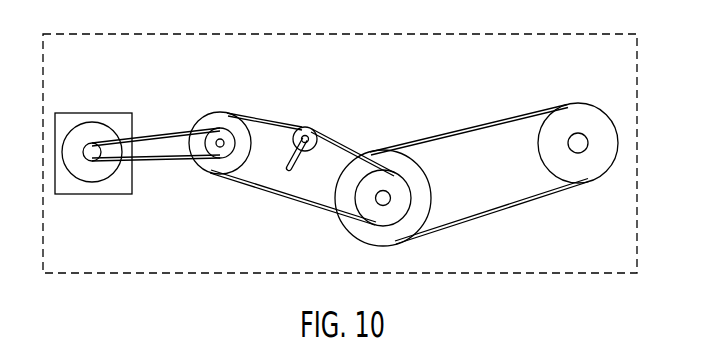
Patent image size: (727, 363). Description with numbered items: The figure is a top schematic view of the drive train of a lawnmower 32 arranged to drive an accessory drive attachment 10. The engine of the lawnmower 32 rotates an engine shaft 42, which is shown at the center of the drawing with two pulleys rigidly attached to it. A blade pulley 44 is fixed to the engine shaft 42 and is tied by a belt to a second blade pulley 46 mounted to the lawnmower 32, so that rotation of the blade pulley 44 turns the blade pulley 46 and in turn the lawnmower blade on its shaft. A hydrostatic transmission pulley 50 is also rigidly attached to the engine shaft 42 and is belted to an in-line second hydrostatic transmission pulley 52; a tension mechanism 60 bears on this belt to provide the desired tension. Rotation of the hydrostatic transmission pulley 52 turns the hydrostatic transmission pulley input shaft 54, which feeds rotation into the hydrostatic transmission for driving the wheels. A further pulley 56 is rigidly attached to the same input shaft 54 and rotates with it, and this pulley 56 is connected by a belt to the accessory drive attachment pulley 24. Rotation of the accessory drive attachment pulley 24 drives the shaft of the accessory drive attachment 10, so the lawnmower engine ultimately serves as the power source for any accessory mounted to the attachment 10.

The accessory drive attachment 10 is at (125, 118).
The accessory drive attachment pulley 24 is at (93, 158).
The lawnmower 32 is at (515, 275).
The engine shaft 42 is at (388, 203).
The blade pulley 44 is at (423, 193).
The second blade pulley 46 is at (605, 141).
The hydrostatic transmission pulley 50 is at (400, 186).
The second hydrostatic transmission pulley 52 is at (218, 118).
The hydrostatic transmission pulley input shaft 54 is at (226, 143).
The pulley 56 is at (242, 115).
The tension mechanism 60 is at (312, 130).